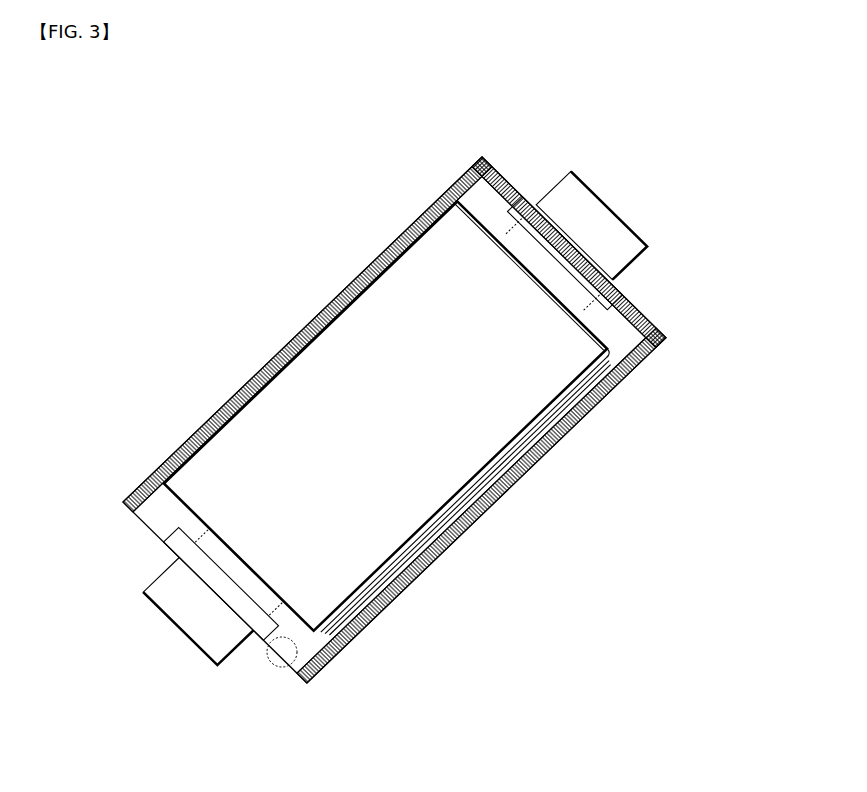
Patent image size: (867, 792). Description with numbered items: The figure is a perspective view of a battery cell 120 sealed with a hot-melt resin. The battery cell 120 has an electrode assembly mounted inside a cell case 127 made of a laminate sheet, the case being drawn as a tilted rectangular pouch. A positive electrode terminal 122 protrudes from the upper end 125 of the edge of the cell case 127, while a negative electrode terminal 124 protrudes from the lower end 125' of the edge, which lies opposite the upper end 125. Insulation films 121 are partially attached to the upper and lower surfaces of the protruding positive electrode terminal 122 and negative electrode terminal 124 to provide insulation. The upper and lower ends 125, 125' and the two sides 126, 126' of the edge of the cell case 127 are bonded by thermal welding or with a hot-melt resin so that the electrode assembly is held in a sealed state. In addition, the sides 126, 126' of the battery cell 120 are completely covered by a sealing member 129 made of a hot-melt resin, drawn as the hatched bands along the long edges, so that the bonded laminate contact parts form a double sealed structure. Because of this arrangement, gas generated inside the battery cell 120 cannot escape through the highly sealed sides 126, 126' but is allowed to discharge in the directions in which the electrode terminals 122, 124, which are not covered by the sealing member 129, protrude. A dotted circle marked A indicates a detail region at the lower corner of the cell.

The battery cell 120 is at (80, 185).
The insulation film 121 is at (527, 200).
The positive electrode terminal 122 is at (603, 197).
The negative electrode terminal 124 is at (185, 614).
The upper end of the edge of the cell case 125 is at (591, 269).
The lower end of the edge of the cell case 125' is at (172, 570).
The side of the cell case edge 126 is at (464, 498).
The side of the cell case edge 126' is at (312, 339).
The cell case 127 is at (325, 355).
The sealing member 129 is at (183, 438).
The detail region A is at (278, 665).